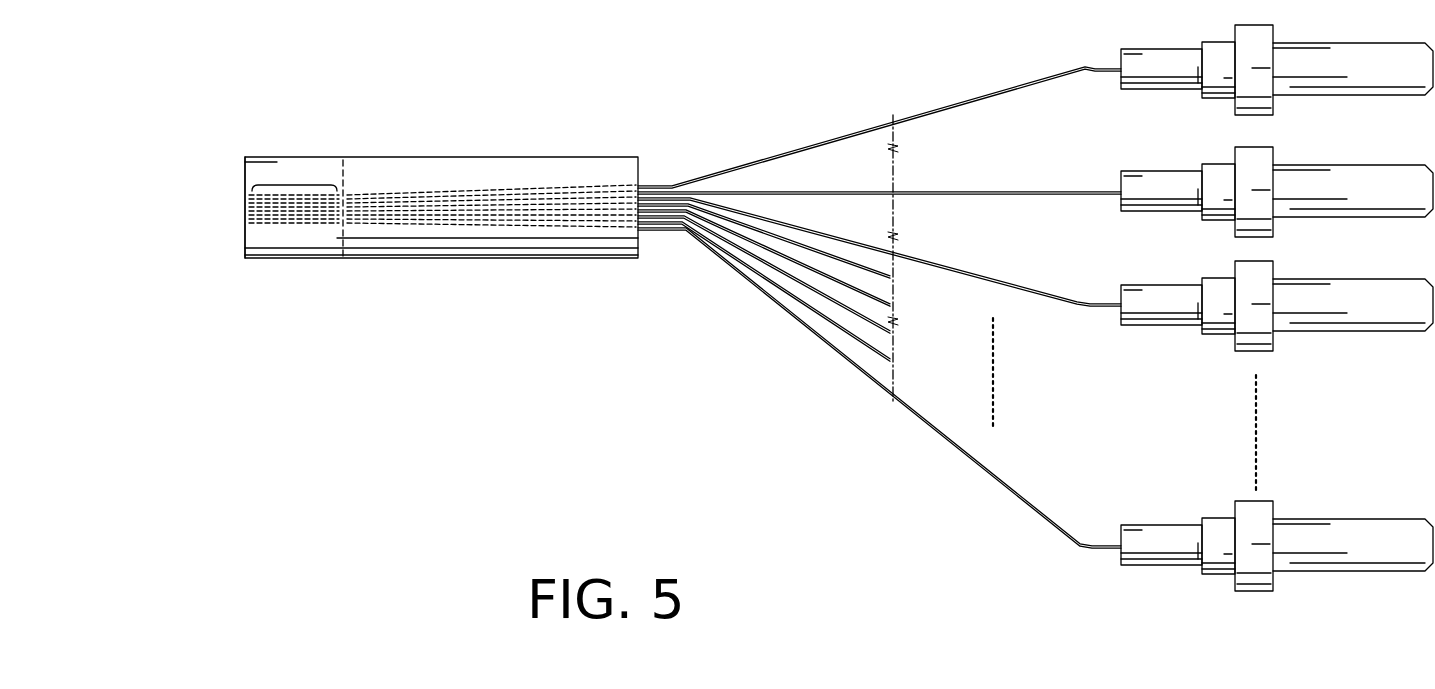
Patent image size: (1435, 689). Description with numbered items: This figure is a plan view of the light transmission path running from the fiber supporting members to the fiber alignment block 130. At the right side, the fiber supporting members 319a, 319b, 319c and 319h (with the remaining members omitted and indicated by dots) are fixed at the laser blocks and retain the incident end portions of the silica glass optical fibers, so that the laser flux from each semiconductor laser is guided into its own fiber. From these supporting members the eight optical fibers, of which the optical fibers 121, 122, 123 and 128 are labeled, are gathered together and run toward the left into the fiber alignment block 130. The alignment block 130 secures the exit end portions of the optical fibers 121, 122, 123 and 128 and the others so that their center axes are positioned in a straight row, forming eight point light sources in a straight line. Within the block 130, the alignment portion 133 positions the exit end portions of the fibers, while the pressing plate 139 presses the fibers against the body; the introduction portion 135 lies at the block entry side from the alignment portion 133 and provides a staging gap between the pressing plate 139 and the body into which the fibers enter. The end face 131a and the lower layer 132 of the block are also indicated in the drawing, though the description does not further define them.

The fiber alignment block 130 is at (455, 140).
The end face of ribbon cable 131a is at (244, 181).
The lower jacket layer 132 is at (290, 246).
The alignment portion 133 is at (293, 185).
The introduction portion 135 is at (505, 249).
The pressing plate 139 is at (565, 173).
The optical fiber 121 is at (995, 95).
The optical fiber 122 is at (996, 195).
The optical fiber 123 is at (1028, 303).
The optical fiber 128 is at (1000, 480).
The fiber supporting member 319a is at (1160, 78).
The fiber supporting member 319b is at (1160, 200).
The fiber supporting member 319c is at (1160, 314).
The fiber supporting member 319h is at (1158, 554).